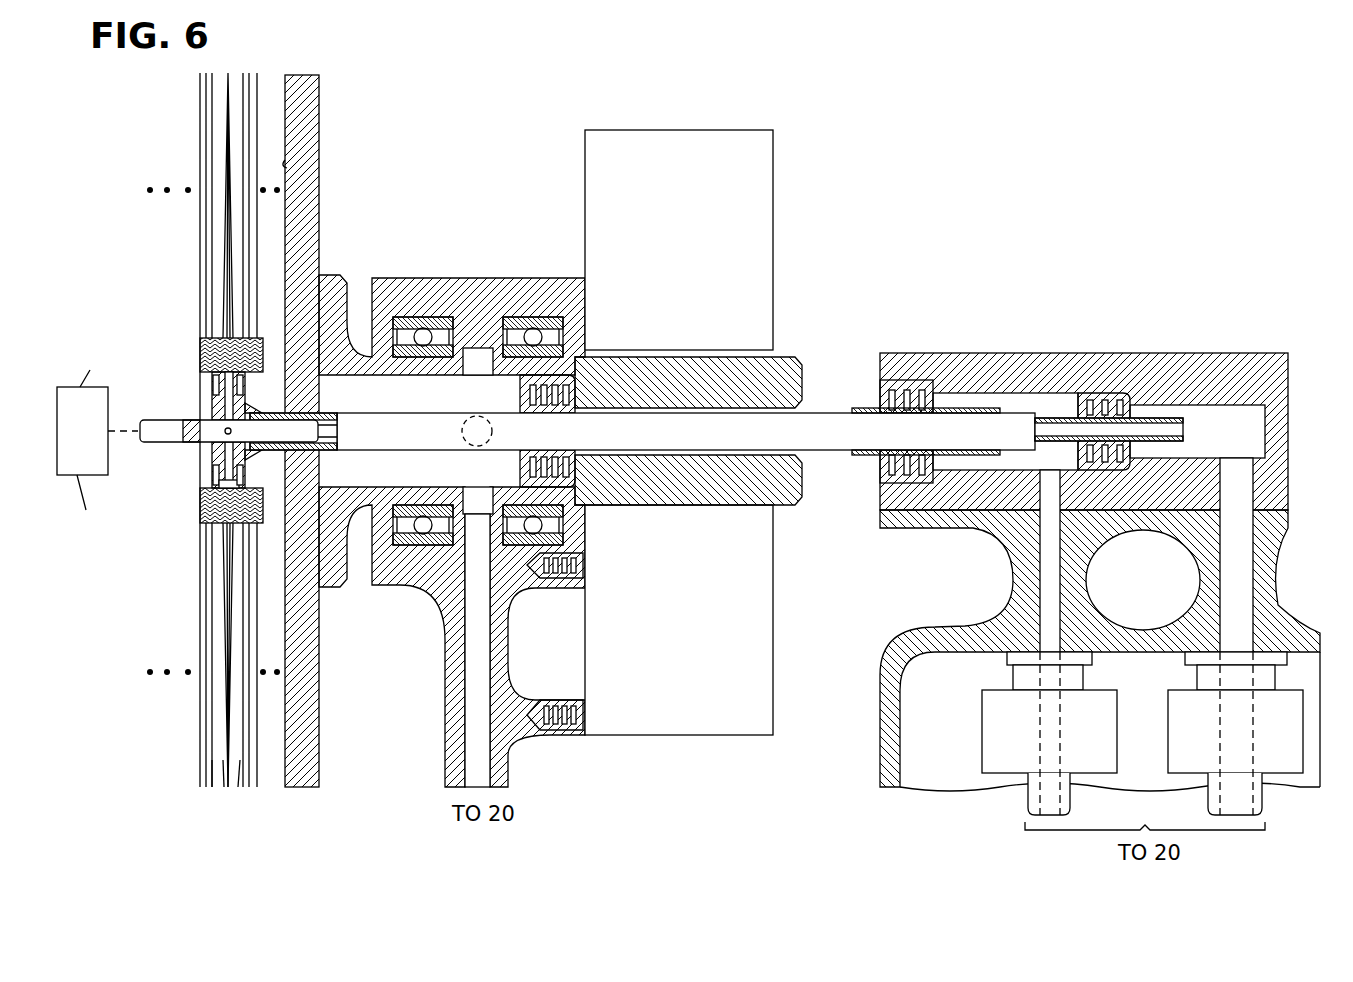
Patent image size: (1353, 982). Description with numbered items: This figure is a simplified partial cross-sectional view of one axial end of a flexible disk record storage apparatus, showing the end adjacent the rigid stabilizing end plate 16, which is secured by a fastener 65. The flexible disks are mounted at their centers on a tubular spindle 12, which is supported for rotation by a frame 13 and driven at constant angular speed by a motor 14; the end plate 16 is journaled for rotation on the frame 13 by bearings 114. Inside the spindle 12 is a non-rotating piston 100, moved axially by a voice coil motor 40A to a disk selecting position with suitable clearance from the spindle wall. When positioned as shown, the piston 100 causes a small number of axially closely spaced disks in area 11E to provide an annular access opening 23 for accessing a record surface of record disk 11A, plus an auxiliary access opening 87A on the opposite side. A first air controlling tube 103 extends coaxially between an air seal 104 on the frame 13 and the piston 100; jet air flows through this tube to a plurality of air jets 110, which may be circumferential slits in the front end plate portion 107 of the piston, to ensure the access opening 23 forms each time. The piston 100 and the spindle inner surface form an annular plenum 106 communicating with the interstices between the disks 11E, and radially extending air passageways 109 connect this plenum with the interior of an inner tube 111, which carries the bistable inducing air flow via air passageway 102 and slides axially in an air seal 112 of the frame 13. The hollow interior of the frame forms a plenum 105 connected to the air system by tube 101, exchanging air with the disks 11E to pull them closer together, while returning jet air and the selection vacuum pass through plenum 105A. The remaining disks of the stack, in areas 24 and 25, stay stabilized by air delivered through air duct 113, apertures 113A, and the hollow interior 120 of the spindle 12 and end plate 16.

The area of stack 24 is at (197, 71).
The area of stack 25 is at (257, 72).
The stabilizing end plate 16 is at (315, 103).
The fastener 65 is at (290, 164).
The tubular spindle 12 is at (200, 346).
The voice coil motor 40A is at (122, 456).
The air jets 110 is at (212, 382).
The piston 100 is at (200, 402).
The front end plate portion 107 is at (213, 472).
The annular plenum 106 is at (220, 486).
The radially extending air passageways 109 is at (232, 406).
The tube 111 is at (292, 418).
The first air controlling tube 103 is at (356, 418).
The apertures 113A is at (478, 378).
The hollow interior 120 is at (374, 480).
The bearings 114 is at (575, 335).
The motor 14 is at (768, 219).
The air seal 104 is at (880, 393).
The plenum 105 is at (1012, 403).
The air seal 112 is at (1078, 408).
The plenum 105A is at (1250, 443).
The frame 13 is at (447, 680).
The air duct 113 is at (480, 724).
The record disk 11A is at (217, 782).
The annular access opening 23 is at (224, 790).
The disks in closely spaced area 11E is at (228, 792).
The auxiliary access opening 87A is at (240, 790).
The tube 101 is at (1030, 806).
The air passageway 102 is at (1262, 806).